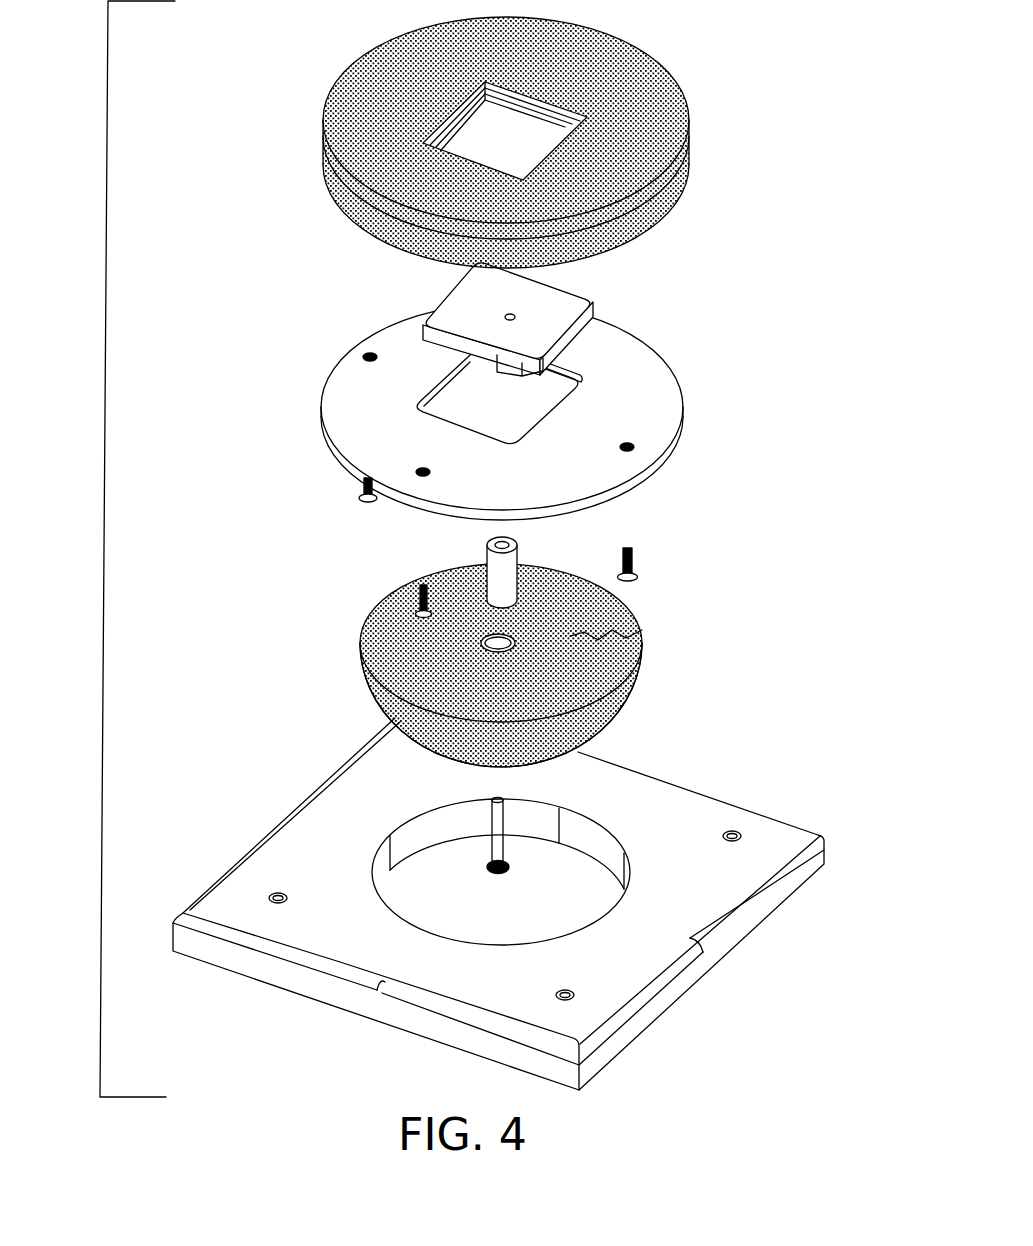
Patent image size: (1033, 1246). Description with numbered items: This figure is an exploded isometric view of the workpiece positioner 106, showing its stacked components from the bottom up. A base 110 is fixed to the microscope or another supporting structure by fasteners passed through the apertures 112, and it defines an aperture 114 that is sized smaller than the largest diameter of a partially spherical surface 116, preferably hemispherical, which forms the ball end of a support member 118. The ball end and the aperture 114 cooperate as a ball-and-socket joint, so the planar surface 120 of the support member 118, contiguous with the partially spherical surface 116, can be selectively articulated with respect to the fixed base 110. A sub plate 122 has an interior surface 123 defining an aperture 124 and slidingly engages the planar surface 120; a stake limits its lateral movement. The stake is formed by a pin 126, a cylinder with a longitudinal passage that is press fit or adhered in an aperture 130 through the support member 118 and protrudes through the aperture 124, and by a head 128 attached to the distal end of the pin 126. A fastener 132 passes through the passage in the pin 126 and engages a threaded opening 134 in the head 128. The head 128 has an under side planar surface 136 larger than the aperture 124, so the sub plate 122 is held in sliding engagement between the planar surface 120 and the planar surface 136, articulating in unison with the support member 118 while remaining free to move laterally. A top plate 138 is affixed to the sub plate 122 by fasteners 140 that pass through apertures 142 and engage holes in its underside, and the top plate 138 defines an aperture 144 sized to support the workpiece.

The workpiece positioner 106 is at (104, 500).
The base 110 is at (727, 952).
The apertures 112 is at (729, 829).
The aperture 114 is at (438, 876).
The partially spherical surface 116 is at (398, 722).
The support member 118 is at (642, 670).
The planar surface 120 is at (642, 630).
The sub plate 122 is at (677, 443).
The interior surface 123 is at (585, 402).
The aperture 124 is at (458, 404).
The pin 126 is at (487, 546).
The head 128 is at (567, 306).
The aperture 130 is at (481, 641).
The fastener 132 is at (507, 845).
The threaded opening 134 is at (503, 316).
The under side planar surface 136 is at (582, 348).
The top plate 138 is at (648, 200).
The fasteners 140 is at (638, 572).
The apertures 142 is at (367, 353).
The aperture 144 is at (506, 136).